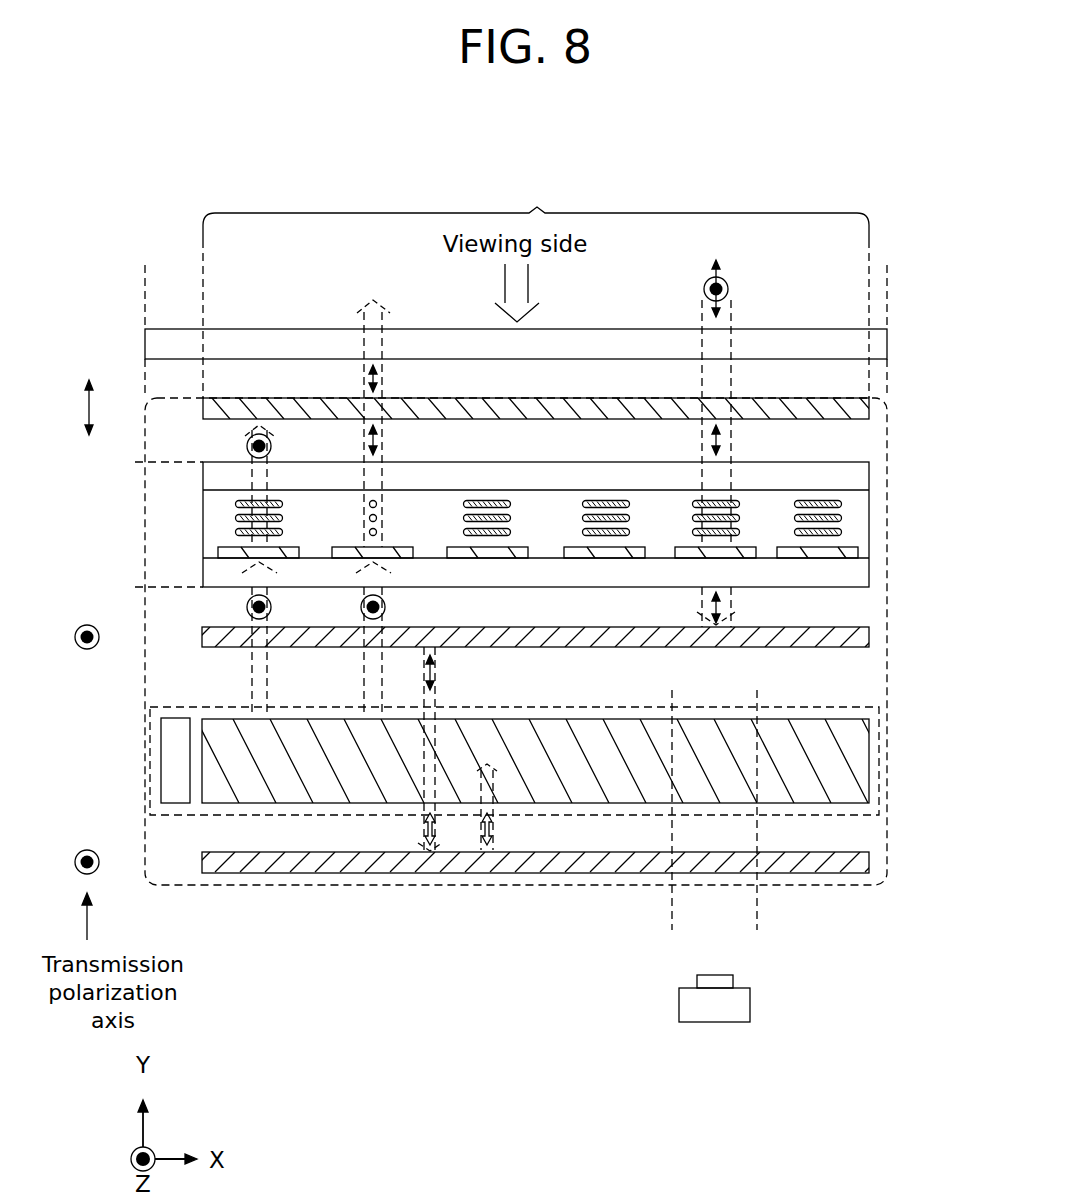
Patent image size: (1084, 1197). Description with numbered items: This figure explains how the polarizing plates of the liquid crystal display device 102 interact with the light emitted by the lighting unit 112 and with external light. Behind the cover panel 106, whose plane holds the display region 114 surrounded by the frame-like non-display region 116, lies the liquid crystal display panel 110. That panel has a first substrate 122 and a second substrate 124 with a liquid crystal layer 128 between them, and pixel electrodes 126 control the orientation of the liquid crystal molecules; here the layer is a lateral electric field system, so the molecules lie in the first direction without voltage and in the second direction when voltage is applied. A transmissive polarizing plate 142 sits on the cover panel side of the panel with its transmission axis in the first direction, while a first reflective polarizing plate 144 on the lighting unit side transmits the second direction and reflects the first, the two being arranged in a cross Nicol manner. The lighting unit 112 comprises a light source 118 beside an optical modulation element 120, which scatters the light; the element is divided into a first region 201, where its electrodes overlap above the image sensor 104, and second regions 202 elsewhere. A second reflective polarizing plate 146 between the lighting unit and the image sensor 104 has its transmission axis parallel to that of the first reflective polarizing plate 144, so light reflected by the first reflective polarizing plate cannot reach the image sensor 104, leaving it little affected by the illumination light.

The liquid crystal display device 102 is at (145, 752).
The image sensor 104 is at (742, 1003).
The cover panel 106 is at (880, 348).
The liquid crystal display panel 110 is at (135, 462).
The lighting unit 112 is at (879, 763).
The display region 114 is at (536, 288).
The non-display region 116 is at (943, 273).
The light source 118 is at (178, 797).
The optical modulation element 120 is at (315, 786).
The first substrate 122 is at (851, 573).
The second substrate 124 is at (851, 477).
The pixel electrode 126 is at (853, 553).
The liquid crystal layer 128 is at (851, 511).
The transmissive polarizing plate 142 is at (860, 412).
The first reflective polarizing plate 144 is at (858, 641).
The second reflective polarizing plate 146 is at (860, 867).
The first region 201 is at (757, 924).
The second region 202 is at (202, 697).